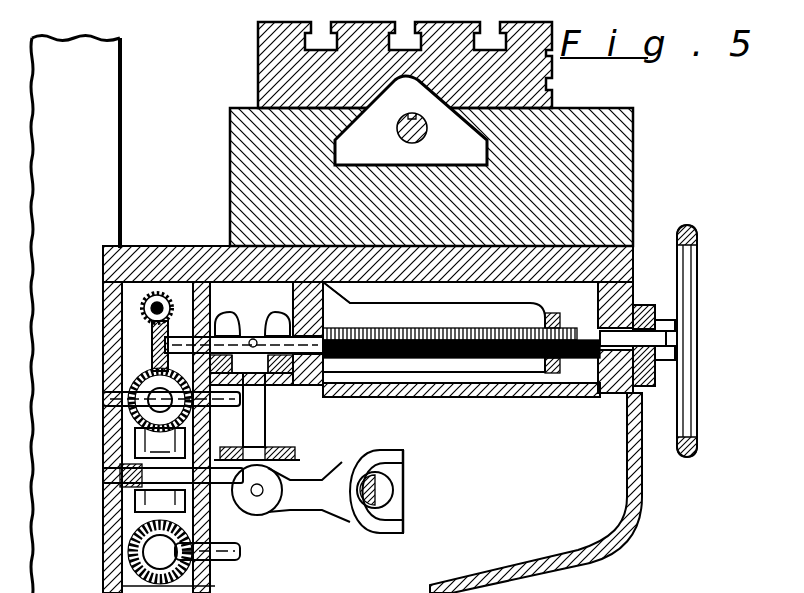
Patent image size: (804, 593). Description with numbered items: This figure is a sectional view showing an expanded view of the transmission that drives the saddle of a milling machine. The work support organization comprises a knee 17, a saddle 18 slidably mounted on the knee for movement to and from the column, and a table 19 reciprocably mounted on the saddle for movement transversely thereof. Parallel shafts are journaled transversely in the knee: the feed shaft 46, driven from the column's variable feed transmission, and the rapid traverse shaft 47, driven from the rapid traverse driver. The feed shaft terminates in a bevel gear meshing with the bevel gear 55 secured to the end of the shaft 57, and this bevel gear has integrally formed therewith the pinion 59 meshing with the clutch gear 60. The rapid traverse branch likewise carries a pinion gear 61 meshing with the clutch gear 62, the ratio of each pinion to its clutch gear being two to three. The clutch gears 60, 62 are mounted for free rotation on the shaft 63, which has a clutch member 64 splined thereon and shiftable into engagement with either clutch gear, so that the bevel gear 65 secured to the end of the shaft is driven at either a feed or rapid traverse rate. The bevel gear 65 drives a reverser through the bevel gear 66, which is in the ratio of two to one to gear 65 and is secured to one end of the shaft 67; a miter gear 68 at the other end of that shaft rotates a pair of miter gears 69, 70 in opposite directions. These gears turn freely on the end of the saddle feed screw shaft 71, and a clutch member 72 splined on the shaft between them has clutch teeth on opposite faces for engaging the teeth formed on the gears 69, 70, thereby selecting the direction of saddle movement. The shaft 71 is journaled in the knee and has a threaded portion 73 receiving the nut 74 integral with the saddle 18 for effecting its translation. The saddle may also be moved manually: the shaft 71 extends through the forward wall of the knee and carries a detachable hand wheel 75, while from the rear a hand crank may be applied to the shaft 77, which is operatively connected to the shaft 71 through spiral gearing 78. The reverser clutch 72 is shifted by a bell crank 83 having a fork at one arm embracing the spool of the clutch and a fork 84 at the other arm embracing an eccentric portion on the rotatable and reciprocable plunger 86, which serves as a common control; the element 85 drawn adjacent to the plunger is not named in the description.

The knee 17 is at (642, 497).
The saddle 18 is at (637, 183).
The table 19 is at (556, 72).
The feed shaft 46 is at (106, 426).
The rapid traverse shaft 47 is at (108, 568).
The bevel gear 55 is at (132, 385).
The shaft 57 is at (108, 403).
The pinion 59 is at (108, 368).
The clutch gear 60 is at (105, 452).
The pinion gear 61 is at (215, 587).
The clutch gear 62 is at (244, 546).
The shaft 63 is at (105, 478).
The clutch member 64 is at (108, 510).
The bevel gear 65 is at (240, 510).
The bevel gear 66 is at (298, 458).
The shaft 67 is at (282, 430).
The miter gear 68 is at (270, 392).
The miter gear 69 is at (220, 313).
The miter gear 70 is at (287, 313).
The saddle feed screw shaft 71 is at (327, 311).
The clutch member 72 is at (345, 297).
The threaded portion 73 is at (481, 358).
The nut 74 is at (540, 396).
The hand wheel 75 is at (697, 255).
The shaft 77 is at (165, 296).
The spiral gearing 78 is at (176, 350).
The bell crank 83 is at (323, 497).
The fork 84 is at (358, 537).
The ball 85 is at (405, 478).
The plunger 86 is at (407, 496).